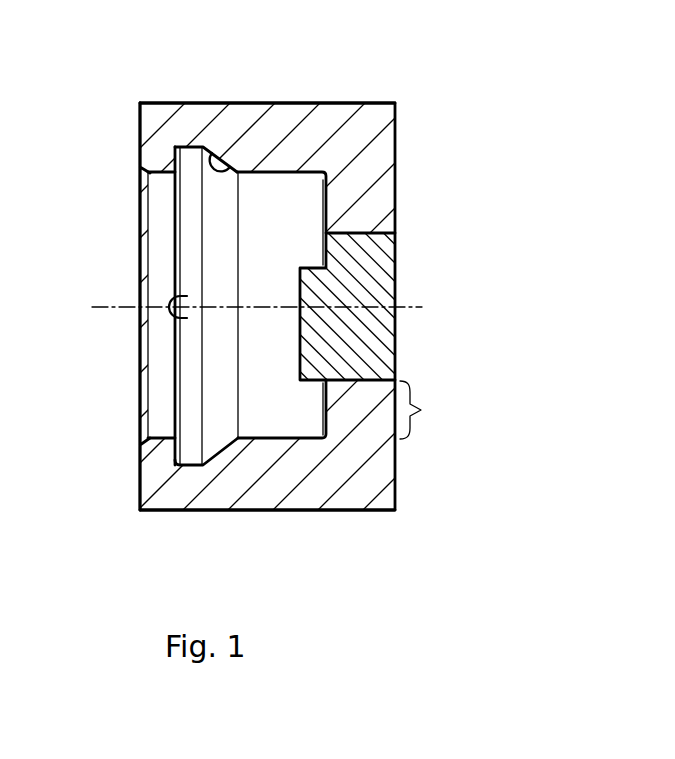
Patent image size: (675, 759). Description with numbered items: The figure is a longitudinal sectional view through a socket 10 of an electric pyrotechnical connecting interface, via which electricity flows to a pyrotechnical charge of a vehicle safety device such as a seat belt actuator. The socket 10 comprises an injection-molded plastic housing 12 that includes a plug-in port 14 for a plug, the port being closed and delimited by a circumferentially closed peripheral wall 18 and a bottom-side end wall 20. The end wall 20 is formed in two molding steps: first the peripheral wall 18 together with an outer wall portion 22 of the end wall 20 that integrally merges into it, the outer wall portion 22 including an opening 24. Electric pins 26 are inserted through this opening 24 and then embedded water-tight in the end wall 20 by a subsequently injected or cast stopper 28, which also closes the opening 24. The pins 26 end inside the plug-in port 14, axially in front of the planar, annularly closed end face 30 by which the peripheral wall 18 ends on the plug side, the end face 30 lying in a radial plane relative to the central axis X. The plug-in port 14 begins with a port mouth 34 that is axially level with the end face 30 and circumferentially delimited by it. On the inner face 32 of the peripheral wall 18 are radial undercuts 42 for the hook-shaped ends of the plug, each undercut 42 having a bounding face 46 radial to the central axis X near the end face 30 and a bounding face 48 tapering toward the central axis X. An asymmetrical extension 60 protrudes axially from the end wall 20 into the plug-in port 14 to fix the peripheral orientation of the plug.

The socket 10 is at (378, 529).
The housing 12 is at (378, 103).
The plug-in port 14 is at (167, 380).
The peripheral wall 18 is at (205, 112).
The end wall 20 is at (365, 220).
The outer wall portion 22 is at (427, 410).
The opening 24 is at (357, 370).
The electric pins 26 is at (169, 310).
The stopper 28 is at (387, 267).
The end face 30 is at (139, 473).
The inner face 32 is at (264, 176).
The port mouth 34 is at (139, 420).
The radial undercuts 42 is at (193, 157).
The bounding face 46 is at (179, 447).
The bounding face 48 is at (229, 170).
The asymmetrical extension 60 is at (309, 370).
The central axis X is at (425, 305).